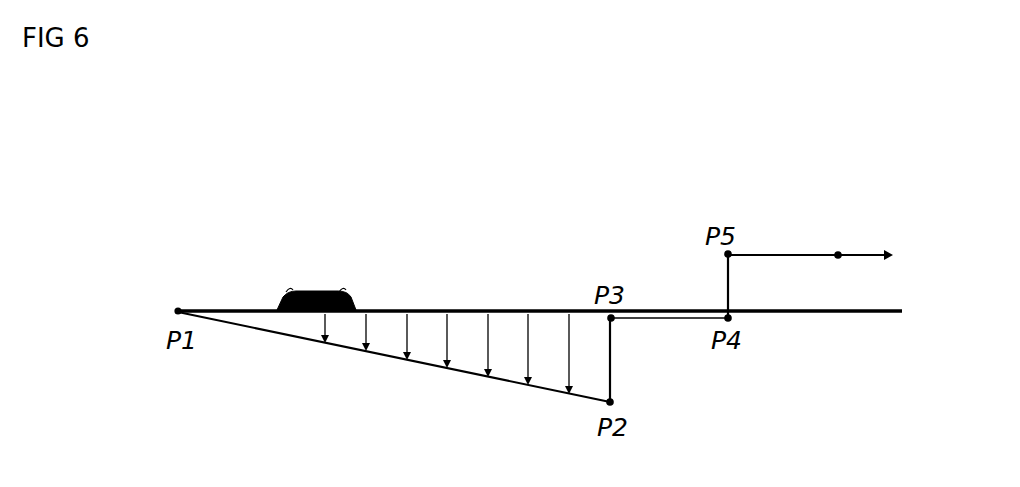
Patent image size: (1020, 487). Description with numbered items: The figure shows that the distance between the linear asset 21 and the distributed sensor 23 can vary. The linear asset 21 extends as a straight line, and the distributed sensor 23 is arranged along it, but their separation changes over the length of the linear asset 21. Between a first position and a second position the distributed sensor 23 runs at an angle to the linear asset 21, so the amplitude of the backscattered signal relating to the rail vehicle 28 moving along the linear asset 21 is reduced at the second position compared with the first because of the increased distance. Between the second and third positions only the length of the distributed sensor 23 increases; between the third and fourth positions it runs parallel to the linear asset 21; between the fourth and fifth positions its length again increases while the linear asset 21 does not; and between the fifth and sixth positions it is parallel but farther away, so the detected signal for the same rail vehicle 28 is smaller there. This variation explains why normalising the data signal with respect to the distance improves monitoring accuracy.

The linear asset 21 is at (838, 313).
The distributed sensor 23 is at (773, 254).
The rail vehicle 28 is at (303, 282).